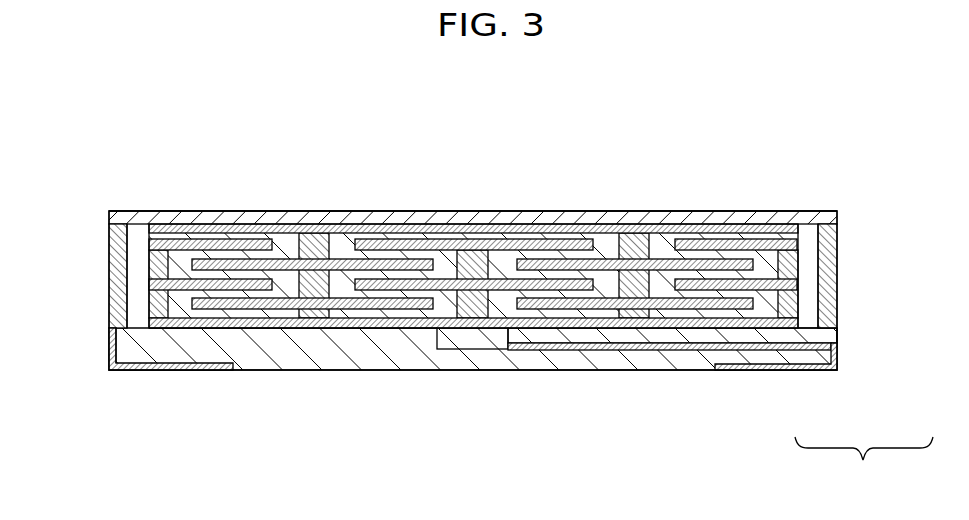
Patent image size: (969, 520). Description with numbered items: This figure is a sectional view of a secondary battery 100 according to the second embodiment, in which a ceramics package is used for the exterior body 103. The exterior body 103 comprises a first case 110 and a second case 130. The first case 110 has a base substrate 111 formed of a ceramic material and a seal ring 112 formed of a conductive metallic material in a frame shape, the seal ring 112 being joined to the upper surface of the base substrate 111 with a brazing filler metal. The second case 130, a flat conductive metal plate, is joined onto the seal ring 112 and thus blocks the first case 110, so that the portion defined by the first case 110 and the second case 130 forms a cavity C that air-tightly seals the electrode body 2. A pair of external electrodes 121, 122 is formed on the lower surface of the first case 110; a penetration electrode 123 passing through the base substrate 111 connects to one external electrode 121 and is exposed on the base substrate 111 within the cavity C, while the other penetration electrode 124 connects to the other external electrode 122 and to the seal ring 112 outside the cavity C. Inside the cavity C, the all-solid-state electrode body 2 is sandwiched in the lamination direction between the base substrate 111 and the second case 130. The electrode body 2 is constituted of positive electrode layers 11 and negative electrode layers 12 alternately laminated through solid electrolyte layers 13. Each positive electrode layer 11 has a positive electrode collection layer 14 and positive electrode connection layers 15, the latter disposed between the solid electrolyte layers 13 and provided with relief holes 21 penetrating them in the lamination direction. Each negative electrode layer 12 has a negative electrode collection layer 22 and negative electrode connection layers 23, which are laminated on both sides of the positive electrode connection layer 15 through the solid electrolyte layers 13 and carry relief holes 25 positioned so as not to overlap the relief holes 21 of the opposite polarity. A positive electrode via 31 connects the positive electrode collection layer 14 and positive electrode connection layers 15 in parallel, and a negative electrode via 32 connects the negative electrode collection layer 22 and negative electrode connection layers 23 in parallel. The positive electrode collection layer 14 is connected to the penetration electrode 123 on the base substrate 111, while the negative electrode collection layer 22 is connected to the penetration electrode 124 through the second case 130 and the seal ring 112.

The secondary battery 100 is at (722, 169).
The exterior body 103 is at (106, 285).
The negative electrode layer 12 is at (730, 217).
The second case 130 is at (776, 210).
The negative electrode collection layer 22 is at (375, 227).
The negative electrode connection layer 23 is at (291, 298).
The relief hole 25 is at (441, 264).
The cavity C is at (607, 234).
The negative electrode via 32 is at (654, 244).
The positive electrode connection layer 15 is at (533, 292).
The relief hole 21 is at (348, 289).
The solid electrolyte layer 13 is at (284, 327).
The positive electrode collection layer 14 is at (415, 326).
The positive electrode via 31 is at (449, 319).
The penetration electrode 123 is at (622, 349).
The positive electrode layer 11 is at (697, 332).
The electrode body 2 is at (800, 332).
The external electrode 121 is at (750, 372).
The external electrode 122 is at (185, 371).
The penetration electrode 124 is at (109, 349).
The base substrate 111 is at (838, 334).
The seal ring 112 is at (837, 279).
The first case 110 is at (864, 465).